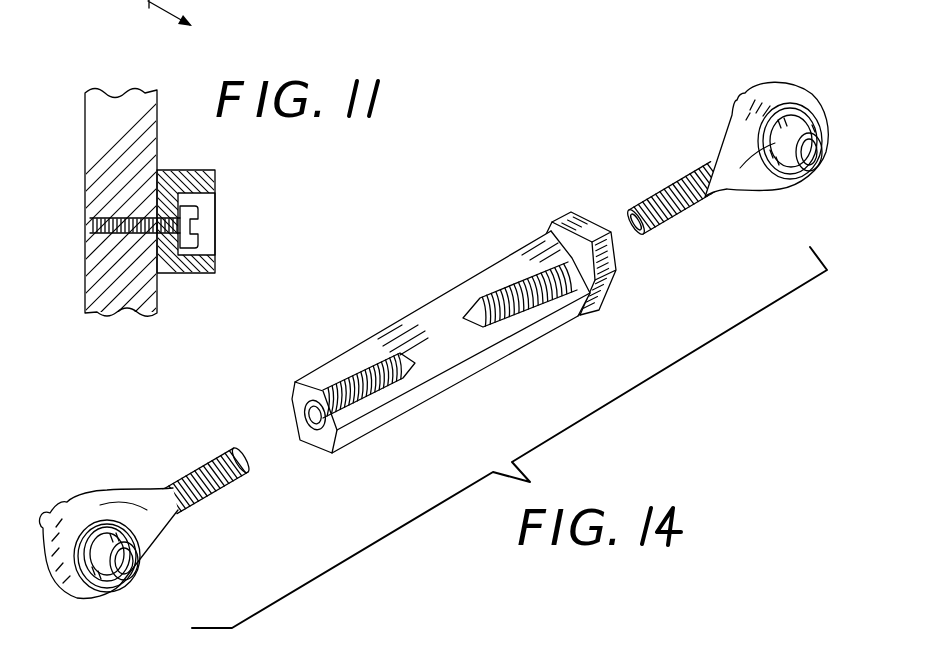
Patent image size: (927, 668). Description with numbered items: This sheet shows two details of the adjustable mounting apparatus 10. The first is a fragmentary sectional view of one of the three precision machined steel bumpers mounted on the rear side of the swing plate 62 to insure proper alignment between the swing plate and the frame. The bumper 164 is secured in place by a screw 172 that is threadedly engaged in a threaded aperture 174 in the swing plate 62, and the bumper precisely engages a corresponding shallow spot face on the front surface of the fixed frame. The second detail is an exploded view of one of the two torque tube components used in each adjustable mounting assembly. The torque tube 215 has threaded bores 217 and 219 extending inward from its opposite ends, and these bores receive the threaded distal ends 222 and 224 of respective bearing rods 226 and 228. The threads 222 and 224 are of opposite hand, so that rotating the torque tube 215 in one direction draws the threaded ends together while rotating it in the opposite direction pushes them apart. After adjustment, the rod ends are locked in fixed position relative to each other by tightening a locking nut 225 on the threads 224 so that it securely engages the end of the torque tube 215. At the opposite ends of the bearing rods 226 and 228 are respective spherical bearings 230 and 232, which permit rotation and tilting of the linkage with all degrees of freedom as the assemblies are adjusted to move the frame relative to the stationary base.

In FIG. 11, the apparatus 10 is at (187, 21).
In FIG. 11, the swing plate 62 is at (157, 137).
In FIG. 11, the bumper 164 is at (215, 181).
In FIG. 11, the screw 172 is at (200, 235).
In FIG. 11, the threaded aperture 174 is at (124, 214).
In FIG. 14, the torque tube 215 is at (441, 338).
In FIG. 14, the threaded bore 217 is at (427, 382).
In FIG. 14, the threaded bore 219 is at (465, 320).
In FIG. 14, the threaded distal end 222 is at (197, 465).
In FIG. 14, the threaded distal end 224 is at (660, 190).
In FIG. 14, the locking nut 225 is at (627, 283).
In FIG. 14, the bearing rod 226 is at (144, 491).
In FIG. 14, the bearing rod 228 is at (714, 124).
In FIG. 14, the spherical bearing 230 is at (138, 483).
In FIG. 14, the spherical bearing 232 is at (773, 133).